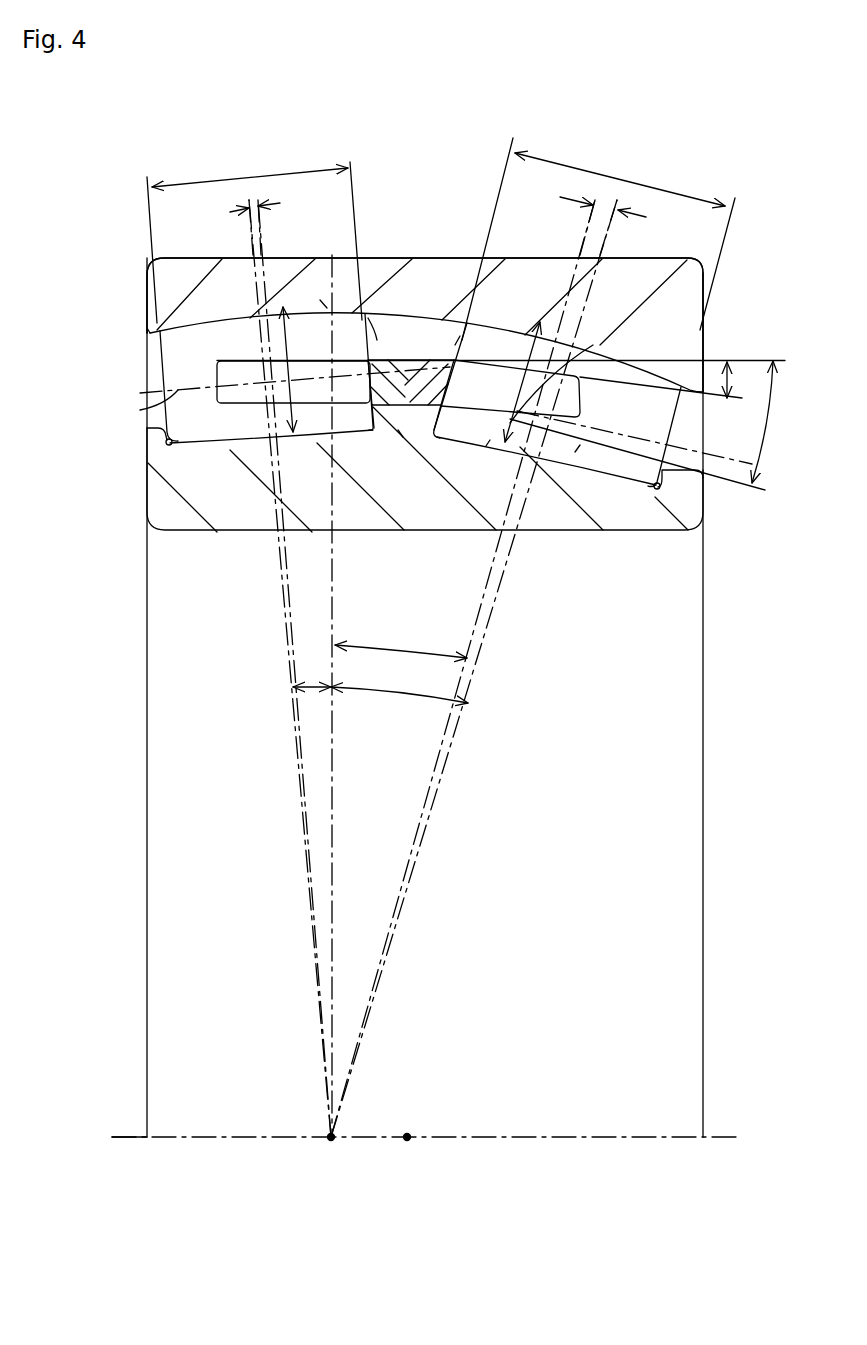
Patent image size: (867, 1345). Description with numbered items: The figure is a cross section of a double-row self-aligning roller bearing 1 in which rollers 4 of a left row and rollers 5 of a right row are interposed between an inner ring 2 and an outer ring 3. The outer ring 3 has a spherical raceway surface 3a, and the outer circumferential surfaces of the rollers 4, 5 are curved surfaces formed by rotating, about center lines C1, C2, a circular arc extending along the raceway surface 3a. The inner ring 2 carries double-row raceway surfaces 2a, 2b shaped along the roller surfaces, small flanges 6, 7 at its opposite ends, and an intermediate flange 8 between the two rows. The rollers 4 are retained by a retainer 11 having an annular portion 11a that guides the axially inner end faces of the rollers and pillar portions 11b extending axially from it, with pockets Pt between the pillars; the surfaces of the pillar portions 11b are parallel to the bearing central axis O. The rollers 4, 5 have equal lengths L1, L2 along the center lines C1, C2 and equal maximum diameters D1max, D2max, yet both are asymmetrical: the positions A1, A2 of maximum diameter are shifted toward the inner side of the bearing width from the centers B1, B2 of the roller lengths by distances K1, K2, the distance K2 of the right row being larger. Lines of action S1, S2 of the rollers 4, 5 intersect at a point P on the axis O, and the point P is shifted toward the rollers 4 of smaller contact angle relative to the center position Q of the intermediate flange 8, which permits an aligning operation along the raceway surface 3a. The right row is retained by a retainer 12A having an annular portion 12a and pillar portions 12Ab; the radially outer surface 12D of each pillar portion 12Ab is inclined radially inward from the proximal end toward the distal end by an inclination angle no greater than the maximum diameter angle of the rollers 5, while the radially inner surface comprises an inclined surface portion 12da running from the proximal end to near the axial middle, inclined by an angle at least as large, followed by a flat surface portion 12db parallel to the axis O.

The double-row self-aligning roller bearing 1 is at (122, 236).
The inner ring 2 is at (170, 507).
The raceway surface 2a is at (230, 447).
The raceway surface 2b is at (660, 500).
The outer ring 3 is at (152, 305).
The raceway surface 3a is at (397, 310).
The roller 4 is at (177, 357).
The roller 5 is at (585, 470).
The flange 6 is at (153, 430).
The flange 7 is at (680, 483).
The intermediate flange 8 is at (395, 462).
The retainer 11 is at (418, 98).
The annular portion 11a is at (377, 340).
The pillar portion 11b is at (303, 366).
The retainer 12A is at (455, 345).
The pillar portion 12Ab is at (512, 399).
The radially outer surface 12D is at (593, 345).
The annular portion 12a is at (403, 437).
The inclined surface portion 12da is at (490, 440).
The flat surface portion 12db is at (580, 445).
The line of action S1 is at (296, 750).
The line of action S2 is at (455, 752).
The center line C1 is at (140, 394).
The center line C2 is at (677, 442).
The pocket Pt is at (237, 374).
The bearing central axis O is at (125, 1135).
The point P is at (331, 1156).
The center position Q is at (407, 1156).
The length L1 is at (254, 235).
The length L2 is at (598, 239).
The distance K1 is at (233, 205).
The distance K2 is at (591, 192).
The position A1 is at (263, 247).
The center B1 is at (253, 250).
The position A2 is at (587, 237).
The center B2 is at (617, 242).
The maximum diameter D1max is at (290, 412).
The maximum diameter D2max is at (508, 445).